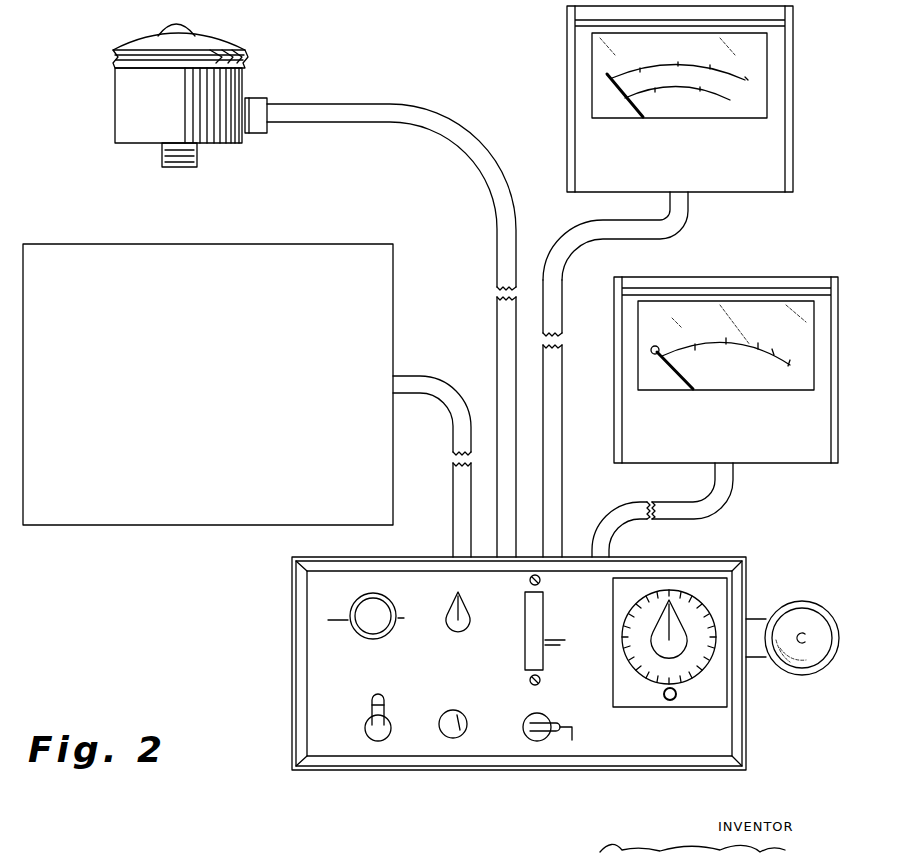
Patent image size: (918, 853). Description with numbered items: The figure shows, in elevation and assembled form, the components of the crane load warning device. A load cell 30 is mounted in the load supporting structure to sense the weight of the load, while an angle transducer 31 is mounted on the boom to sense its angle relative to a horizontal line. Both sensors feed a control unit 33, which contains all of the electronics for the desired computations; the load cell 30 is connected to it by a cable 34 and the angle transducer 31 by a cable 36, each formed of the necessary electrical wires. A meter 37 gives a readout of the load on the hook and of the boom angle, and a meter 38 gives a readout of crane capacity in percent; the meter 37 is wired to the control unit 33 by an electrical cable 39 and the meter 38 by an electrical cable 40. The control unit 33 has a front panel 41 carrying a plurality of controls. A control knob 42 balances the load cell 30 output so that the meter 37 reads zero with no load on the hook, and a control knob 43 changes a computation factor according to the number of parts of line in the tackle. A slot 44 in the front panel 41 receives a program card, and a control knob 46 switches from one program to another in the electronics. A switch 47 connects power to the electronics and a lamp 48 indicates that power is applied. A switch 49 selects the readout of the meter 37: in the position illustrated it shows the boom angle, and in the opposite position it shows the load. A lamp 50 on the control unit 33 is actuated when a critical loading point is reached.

The load cell 30 is at (115, 95).
The angle transducer 31 is at (95, 244).
The control unit 33 is at (292, 590).
The cable 34 is at (305, 104).
The cable 36 is at (428, 376).
The meter 37 is at (567, 73).
The meter 38 is at (703, 278).
The electrical cable 39 is at (565, 242).
The electrical cable 40 is at (731, 497).
The front panel 41 is at (307, 684).
The control knob 42 is at (363, 598).
The control knob 43 is at (450, 601).
The slot 44 is at (545, 616).
The control knob 46 is at (682, 612).
The switch 47 is at (370, 710).
The lamp 48 is at (440, 724).
The switch 49 is at (525, 727).
The lamp 50 is at (804, 601).